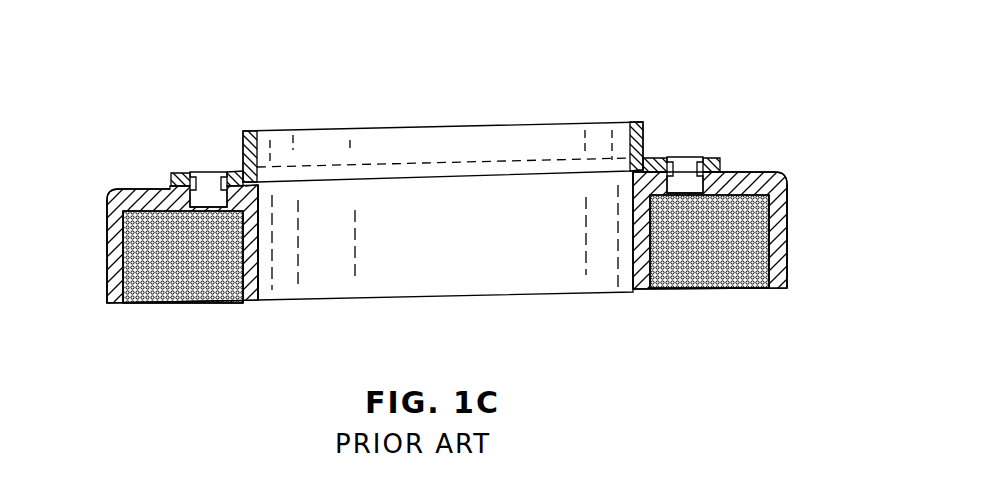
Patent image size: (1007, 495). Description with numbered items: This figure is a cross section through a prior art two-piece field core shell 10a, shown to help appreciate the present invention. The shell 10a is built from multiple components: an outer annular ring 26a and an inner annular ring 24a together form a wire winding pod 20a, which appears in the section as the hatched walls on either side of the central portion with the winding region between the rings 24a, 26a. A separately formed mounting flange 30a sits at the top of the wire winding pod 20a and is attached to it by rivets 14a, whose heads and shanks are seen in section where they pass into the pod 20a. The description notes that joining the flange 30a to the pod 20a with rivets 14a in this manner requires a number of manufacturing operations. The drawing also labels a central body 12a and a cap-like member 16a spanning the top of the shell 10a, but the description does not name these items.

The two-piece field core shell 10a is at (681, 92).
The cell / electrode stack 12a is at (190, 305).
The rivets 14a is at (201, 172).
The cover / lid 16a is at (531, 138).
The wire winding pod 20a is at (107, 220).
The inner annular ring 24a is at (249, 305).
The outer annular ring 26a is at (117, 305).
The mounting flange 30a is at (182, 175).